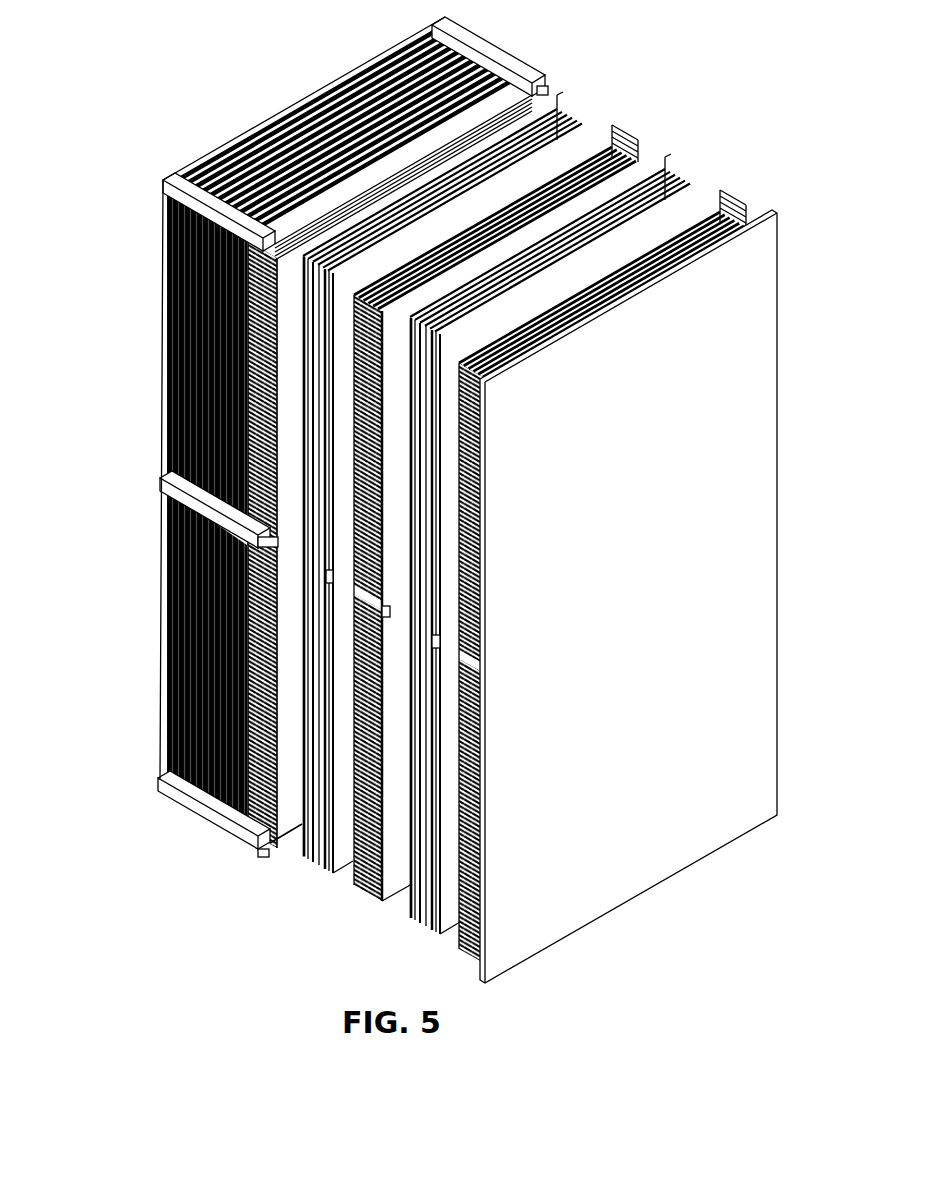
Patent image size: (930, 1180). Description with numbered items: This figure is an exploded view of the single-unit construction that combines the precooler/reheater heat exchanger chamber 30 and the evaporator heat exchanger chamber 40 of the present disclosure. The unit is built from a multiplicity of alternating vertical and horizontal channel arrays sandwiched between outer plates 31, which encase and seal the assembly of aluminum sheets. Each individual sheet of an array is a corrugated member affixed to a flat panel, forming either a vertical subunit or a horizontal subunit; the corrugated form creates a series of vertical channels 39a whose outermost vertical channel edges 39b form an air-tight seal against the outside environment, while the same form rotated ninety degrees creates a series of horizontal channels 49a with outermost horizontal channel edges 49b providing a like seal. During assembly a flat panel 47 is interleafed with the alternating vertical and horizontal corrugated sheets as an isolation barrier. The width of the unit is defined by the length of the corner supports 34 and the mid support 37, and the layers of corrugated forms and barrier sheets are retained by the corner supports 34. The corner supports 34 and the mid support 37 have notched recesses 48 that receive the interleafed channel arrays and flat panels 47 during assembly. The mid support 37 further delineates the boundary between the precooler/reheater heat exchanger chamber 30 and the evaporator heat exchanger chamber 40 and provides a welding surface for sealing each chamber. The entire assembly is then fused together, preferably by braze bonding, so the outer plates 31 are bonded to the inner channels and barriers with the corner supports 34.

The precooler/reheater heat exchanger chamber 30 is at (82, 195).
The outer plate 31 is at (320, 94).
The corner support 34 is at (502, 45).
The mid support 37 is at (170, 495).
The vertical channel 39a is at (302, 858).
The outermost vertical channel edge 39b is at (305, 300).
The evaporator heat exchanger chamber 40 is at (82, 492).
The flat panel 47 is at (618, 138).
The notched recess 48 is at (546, 90).
The horizontal channel 49a is at (353, 885).
The outermost horizontal channel edge 49b is at (398, 265).